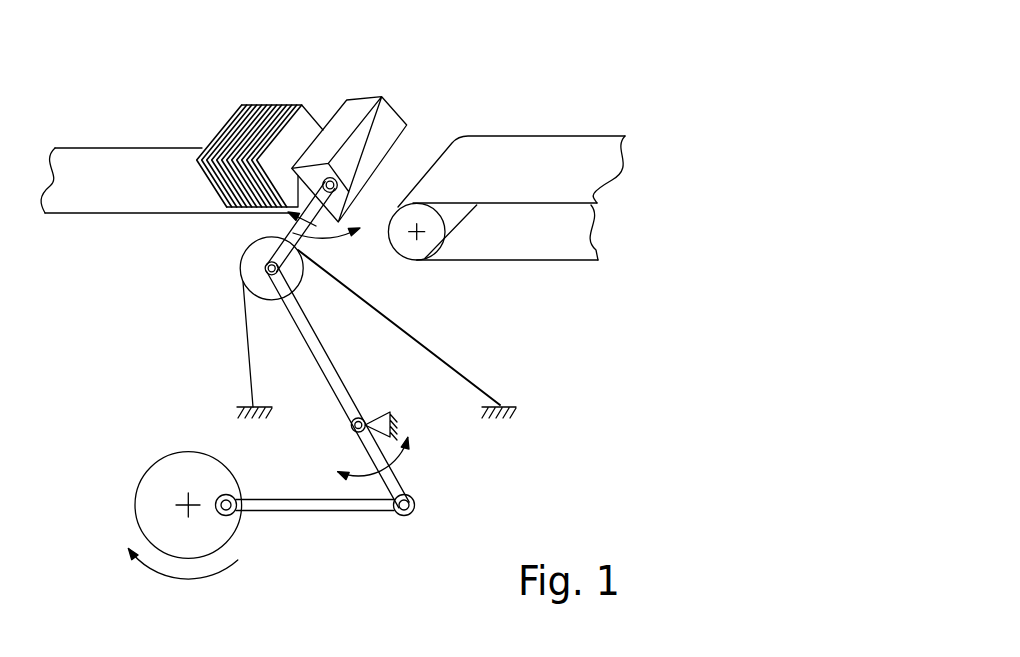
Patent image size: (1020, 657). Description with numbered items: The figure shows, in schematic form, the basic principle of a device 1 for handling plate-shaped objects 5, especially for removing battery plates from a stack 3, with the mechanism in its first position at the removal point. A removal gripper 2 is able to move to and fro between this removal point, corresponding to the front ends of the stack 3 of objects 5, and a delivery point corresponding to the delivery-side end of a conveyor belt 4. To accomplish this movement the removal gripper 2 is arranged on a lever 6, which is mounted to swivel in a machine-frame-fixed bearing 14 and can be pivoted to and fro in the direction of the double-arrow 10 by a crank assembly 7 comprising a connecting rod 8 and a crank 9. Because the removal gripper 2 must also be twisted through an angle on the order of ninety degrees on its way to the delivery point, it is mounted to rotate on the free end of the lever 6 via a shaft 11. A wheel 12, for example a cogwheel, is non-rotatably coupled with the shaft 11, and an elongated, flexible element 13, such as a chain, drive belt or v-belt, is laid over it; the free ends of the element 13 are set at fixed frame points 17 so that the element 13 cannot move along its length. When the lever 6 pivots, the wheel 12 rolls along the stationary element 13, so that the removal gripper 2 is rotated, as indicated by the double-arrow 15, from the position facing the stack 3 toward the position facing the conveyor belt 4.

The device 1 is at (445, 93).
The removal gripper 2 is at (372, 133).
The stack 3 is at (208, 108).
The conveyor belt 4 is at (533, 170).
The objects 5 is at (293, 142).
The lever 6 is at (315, 347).
The crank assembly 7 is at (352, 532).
The connecting rod 8 is at (302, 505).
The crank 9 is at (162, 492).
The double-arrow 10 is at (400, 455).
The shaft 11 is at (287, 233).
The wheel 12 is at (248, 267).
The elongated flexible element 13 is at (245, 350).
The machine-frame-fixed bearing 14 is at (352, 427).
The double-arrow 15 is at (320, 233).
The fixed frame points 17 is at (250, 407).